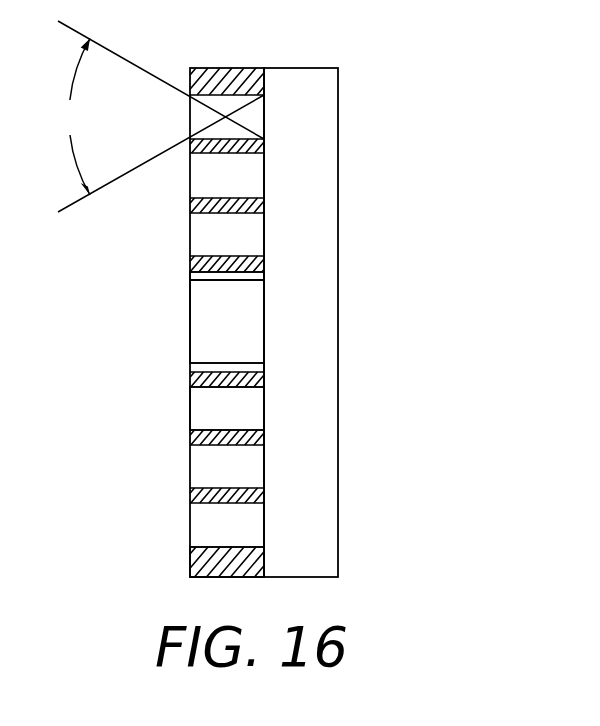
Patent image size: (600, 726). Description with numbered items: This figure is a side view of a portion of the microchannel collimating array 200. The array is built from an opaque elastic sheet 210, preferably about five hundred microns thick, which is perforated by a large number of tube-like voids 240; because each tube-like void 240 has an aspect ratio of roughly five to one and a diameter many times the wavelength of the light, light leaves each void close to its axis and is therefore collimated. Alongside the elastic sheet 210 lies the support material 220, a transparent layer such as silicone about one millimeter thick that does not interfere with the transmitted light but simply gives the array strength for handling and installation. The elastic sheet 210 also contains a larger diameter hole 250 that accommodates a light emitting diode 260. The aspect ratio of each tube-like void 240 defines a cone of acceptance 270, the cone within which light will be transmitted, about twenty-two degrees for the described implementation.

The microchannel collimating array 200 is at (363, 123).
The elastic sheet 210 is at (190, 560).
The support material 220 is at (304, 95).
The tube-like void 240 is at (202, 407).
The larger diameter hole 250 is at (212, 276).
The light emitting diode 260 is at (205, 317).
The cone of acceptance 270 is at (156, 116).